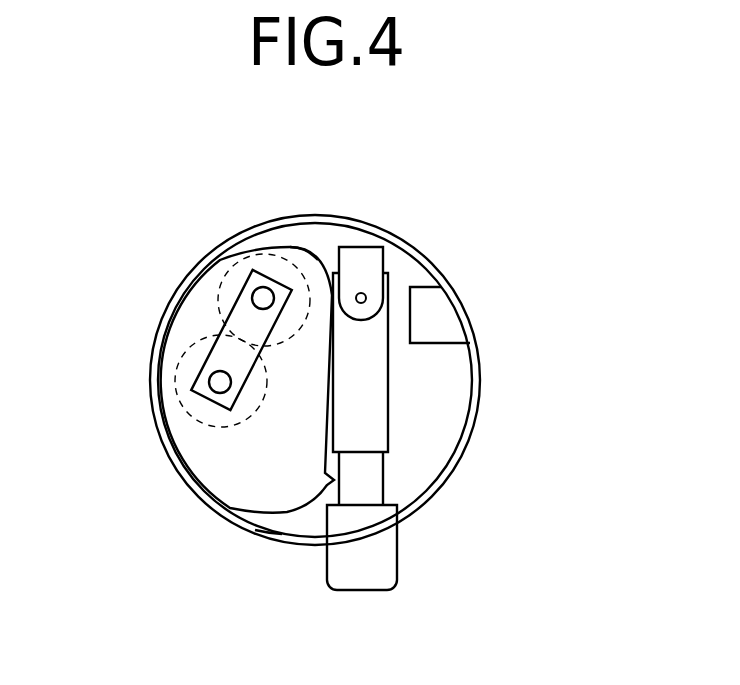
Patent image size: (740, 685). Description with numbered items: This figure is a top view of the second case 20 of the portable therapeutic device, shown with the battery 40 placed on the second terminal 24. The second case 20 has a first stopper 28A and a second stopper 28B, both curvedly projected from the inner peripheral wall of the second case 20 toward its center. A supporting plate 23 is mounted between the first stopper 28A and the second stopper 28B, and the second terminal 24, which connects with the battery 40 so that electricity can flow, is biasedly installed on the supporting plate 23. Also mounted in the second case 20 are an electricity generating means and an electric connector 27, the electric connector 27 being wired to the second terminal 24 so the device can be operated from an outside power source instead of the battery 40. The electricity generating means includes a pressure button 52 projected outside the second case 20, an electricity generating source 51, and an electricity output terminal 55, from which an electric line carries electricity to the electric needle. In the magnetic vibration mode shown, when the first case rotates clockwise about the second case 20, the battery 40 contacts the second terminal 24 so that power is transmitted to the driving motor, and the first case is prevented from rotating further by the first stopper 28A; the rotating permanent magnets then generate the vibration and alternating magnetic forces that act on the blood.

The second case 20 is at (256, 220).
The supporting plate 23 is at (220, 473).
The second terminal 24 is at (240, 320).
The electric connector 27 is at (447, 323).
The first stopper 28A is at (303, 247).
The second stopper 28B is at (272, 522).
The battery 40 is at (178, 370).
The electricity generating source 51 is at (372, 428).
The pressure button 52 is at (388, 558).
The electricity output terminal 55 is at (363, 297).